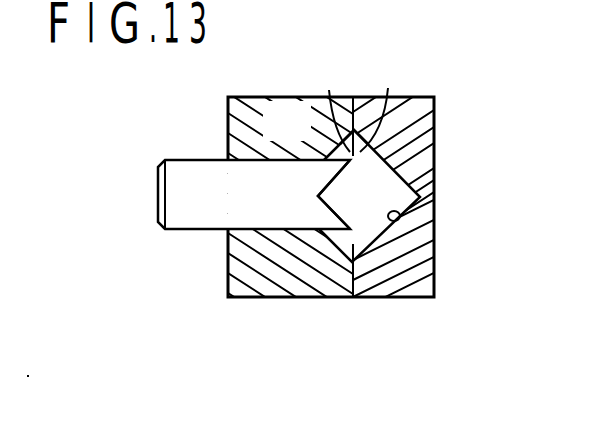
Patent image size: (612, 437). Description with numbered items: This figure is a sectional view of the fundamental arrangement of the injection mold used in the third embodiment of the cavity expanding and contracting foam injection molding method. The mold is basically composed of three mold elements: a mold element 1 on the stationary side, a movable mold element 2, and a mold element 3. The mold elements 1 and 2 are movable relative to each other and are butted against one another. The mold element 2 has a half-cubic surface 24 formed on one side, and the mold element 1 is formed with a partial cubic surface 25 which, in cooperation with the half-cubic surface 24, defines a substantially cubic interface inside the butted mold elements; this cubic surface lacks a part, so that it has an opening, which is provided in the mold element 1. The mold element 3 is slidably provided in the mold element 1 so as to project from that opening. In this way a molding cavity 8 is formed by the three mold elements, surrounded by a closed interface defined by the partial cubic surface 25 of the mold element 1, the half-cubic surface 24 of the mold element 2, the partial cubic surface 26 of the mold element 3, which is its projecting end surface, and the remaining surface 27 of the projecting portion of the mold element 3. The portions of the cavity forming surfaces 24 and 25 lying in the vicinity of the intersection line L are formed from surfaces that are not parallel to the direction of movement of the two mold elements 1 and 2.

The mold element 1 is at (263, 203).
The mold element 2 is at (420, 287).
The mold element 3 is at (254, 165).
The molding cavity 8 is at (395, 157).
The half-cubic surface 24 is at (400, 218).
The partial cubic surface 25 is at (353, 129).
The partial cubic surface 26 is at (303, 196).
The remaining surface 27 is at (290, 123).
The intersection line L is at (362, 100).